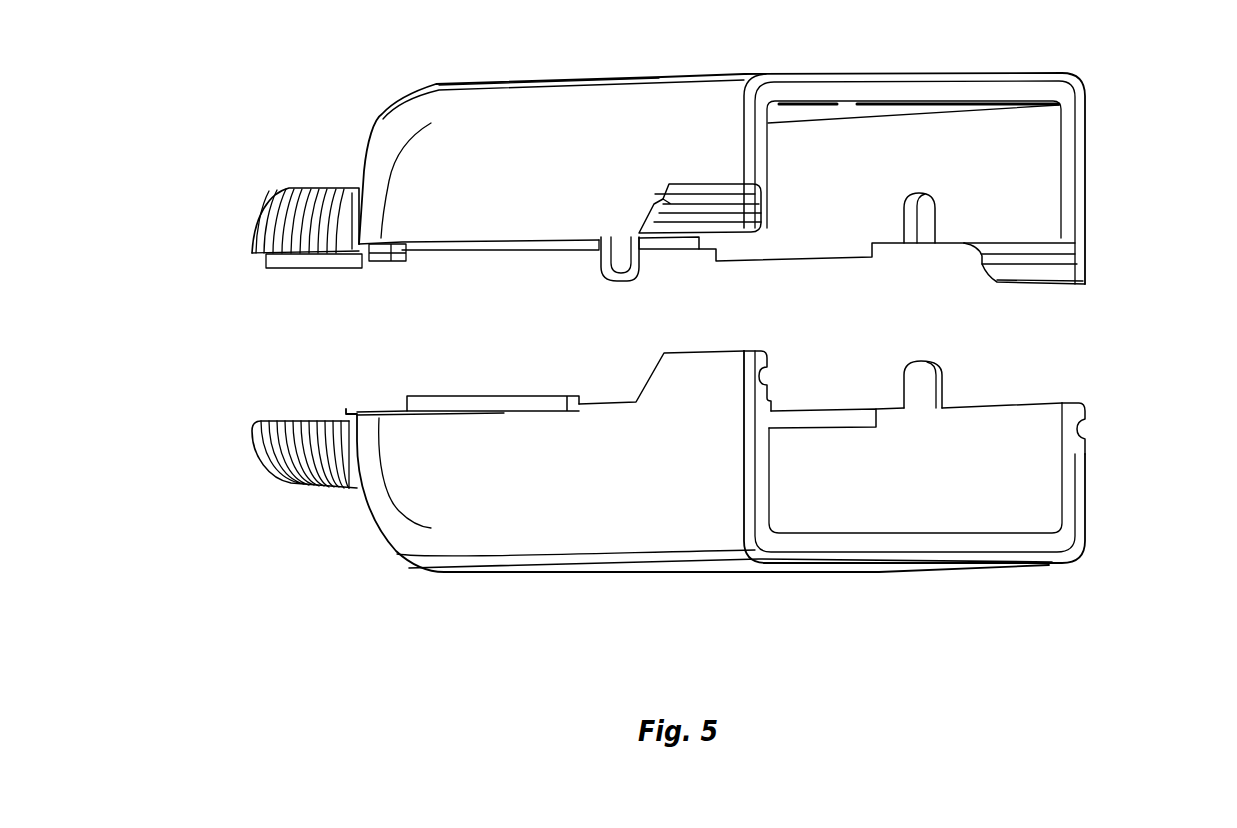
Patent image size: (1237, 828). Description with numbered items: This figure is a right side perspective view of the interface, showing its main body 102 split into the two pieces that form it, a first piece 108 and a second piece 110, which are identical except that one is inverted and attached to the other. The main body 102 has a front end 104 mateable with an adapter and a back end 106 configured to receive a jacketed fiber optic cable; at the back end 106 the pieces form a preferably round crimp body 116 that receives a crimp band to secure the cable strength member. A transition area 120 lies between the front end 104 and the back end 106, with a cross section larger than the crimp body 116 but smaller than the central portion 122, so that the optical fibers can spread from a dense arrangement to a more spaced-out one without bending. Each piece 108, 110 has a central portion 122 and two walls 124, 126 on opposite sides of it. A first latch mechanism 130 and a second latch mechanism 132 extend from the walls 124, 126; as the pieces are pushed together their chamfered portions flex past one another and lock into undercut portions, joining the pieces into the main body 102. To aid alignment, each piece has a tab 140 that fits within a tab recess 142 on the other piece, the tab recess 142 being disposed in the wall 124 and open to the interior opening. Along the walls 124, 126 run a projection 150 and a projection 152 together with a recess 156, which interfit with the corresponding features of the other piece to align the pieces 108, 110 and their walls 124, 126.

The main body 102 is at (1160, 70).
The front end 104 is at (1092, 131).
The back end 106 is at (258, 210).
The first piece 108 is at (873, 574).
The second piece 110 is at (605, 74).
The crimp body 116 is at (320, 488).
The transition area 120 is at (385, 117).
The central portion 122 is at (910, 69).
The wall 124 is at (1003, 185).
The wall 126 is at (612, 167).
The first latch mechanism 130 is at (770, 222).
The second latch mechanism 132 is at (1046, 292).
The tab 140 is at (612, 283).
The tab recess 142 is at (925, 190).
The projection 150 is at (500, 395).
The projection 152 is at (563, 243).
The recess 156 is at (870, 406).